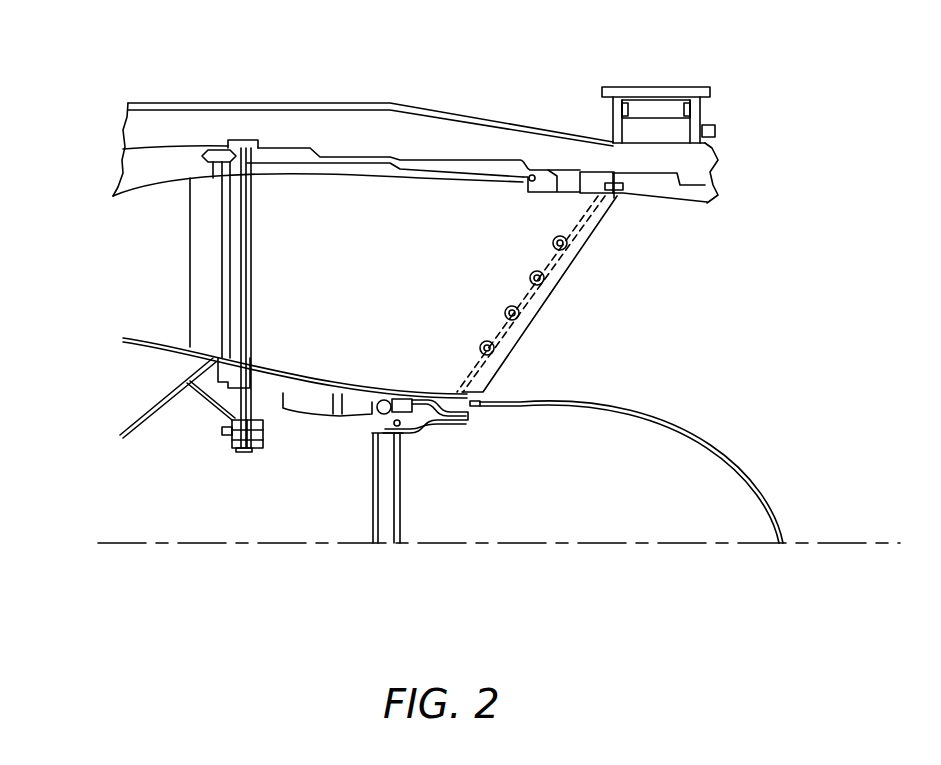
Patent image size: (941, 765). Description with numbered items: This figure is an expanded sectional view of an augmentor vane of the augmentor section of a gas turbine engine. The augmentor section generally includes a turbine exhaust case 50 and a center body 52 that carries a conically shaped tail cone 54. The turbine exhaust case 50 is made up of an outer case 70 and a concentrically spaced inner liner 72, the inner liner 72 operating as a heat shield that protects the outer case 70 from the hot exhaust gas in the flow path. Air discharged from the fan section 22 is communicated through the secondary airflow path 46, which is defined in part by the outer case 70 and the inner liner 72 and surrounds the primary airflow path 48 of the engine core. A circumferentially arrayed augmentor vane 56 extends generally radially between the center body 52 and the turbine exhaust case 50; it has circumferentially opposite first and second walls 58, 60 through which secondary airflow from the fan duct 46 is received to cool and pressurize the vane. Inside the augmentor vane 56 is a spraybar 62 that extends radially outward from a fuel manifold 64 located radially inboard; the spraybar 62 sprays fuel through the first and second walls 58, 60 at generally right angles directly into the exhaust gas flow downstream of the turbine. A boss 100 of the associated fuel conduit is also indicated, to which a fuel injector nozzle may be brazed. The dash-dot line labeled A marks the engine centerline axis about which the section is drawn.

The fan section 22 is at (104, 134).
The secondary airflow path 46 is at (386, 127).
The primary airflow path 48 is at (136, 263).
The turbine exhaust case 50 is at (466, 90).
The center body 52 is at (164, 484).
The tail cone 54 is at (776, 494).
The augmentor vane 56 is at (350, 292).
The first wall 58 is at (513, 340).
The second wall 60 is at (581, 257).
The spraybar 62 is at (541, 305).
The fuel manifold 64 is at (372, 478).
The outer case 70 is at (560, 138).
The inner liner 72 is at (702, 195).
The boss 100 is at (574, 240).
The engine axis A is at (877, 543).